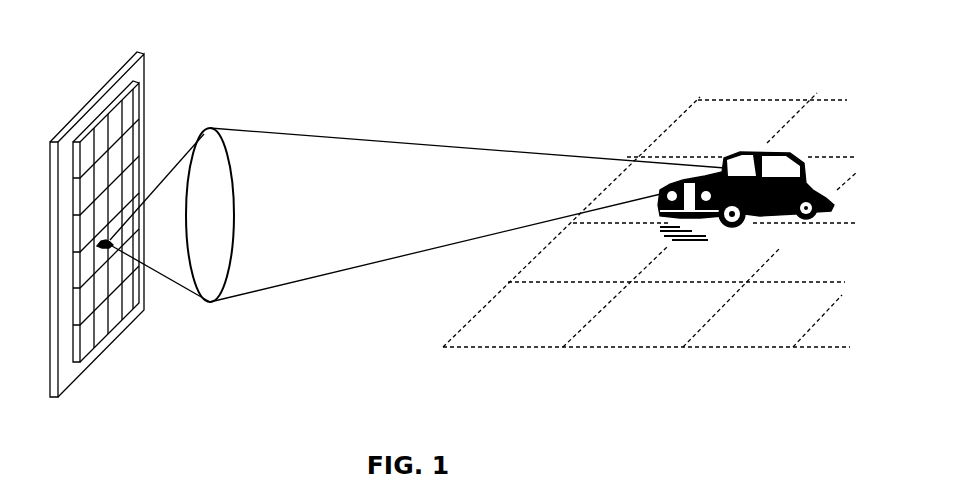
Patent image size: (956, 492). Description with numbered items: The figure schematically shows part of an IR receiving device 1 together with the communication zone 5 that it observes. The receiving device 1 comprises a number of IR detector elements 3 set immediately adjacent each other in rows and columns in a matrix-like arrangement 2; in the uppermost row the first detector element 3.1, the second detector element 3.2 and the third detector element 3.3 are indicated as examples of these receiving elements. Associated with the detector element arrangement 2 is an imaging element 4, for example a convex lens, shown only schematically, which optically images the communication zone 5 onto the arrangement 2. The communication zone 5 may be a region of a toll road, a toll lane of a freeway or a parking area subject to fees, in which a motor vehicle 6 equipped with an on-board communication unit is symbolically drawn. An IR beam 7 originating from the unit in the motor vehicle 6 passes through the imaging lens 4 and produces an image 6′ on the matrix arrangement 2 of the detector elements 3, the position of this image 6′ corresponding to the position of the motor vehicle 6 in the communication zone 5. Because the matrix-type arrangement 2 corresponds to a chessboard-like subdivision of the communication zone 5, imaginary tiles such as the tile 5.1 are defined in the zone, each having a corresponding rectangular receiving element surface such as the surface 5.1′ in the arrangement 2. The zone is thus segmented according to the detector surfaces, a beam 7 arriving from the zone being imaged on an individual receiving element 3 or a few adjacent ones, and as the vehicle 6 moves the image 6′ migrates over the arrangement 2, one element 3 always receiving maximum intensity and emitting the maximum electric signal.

The IR receiving device 1 is at (145, 123).
The matrix-like arrangement 2 is at (113, 272).
The IR detector elements 3 is at (113, 310).
The first detector element 3.1 is at (88, 148).
The second detector element 3.2 is at (104, 135).
The third detector element 3.3 is at (117, 120).
The imaging element 4 is at (210, 165).
The communication zone 5 is at (627, 355).
The tile 5.1 is at (510, 332).
The receiving element surface 5.1′ is at (139, 108).
The motor vehicle 6 is at (723, 158).
The image 6′ is at (153, 218).
The IR beam 7 is at (297, 284).